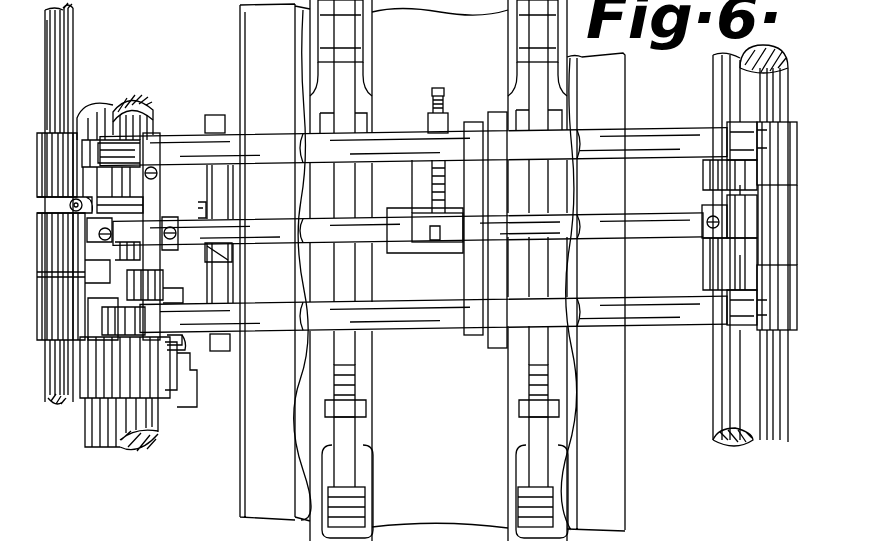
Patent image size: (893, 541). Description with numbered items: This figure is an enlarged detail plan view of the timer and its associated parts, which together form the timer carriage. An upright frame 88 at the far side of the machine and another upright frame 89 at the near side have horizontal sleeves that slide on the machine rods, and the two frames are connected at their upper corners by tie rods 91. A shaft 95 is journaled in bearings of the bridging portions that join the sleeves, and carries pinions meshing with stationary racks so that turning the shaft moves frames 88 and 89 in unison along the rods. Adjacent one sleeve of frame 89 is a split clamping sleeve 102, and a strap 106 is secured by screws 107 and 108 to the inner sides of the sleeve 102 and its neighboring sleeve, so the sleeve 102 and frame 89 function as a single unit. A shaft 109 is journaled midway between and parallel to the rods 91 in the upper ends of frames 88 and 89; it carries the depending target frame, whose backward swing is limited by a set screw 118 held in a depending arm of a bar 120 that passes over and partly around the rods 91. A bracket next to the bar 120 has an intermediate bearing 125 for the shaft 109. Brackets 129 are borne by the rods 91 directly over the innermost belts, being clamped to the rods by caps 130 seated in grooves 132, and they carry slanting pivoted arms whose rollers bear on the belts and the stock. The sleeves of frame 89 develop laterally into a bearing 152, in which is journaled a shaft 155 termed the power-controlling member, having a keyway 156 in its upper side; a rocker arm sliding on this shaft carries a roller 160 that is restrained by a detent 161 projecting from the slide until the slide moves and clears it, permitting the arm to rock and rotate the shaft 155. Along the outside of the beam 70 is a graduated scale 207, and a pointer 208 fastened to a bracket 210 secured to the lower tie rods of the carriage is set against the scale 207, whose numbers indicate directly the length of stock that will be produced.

The beam 70 is at (435, 267).
The upright frame 88 is at (786, 183).
The upright frame 89 is at (148, 98).
The tie rods 91 is at (404, 140).
The shaft 95 is at (640, 222).
The split clamping sleeve 102 is at (80, 407).
The strap 106 is at (188, 375).
The screw 107 is at (183, 357).
The screw 108 is at (187, 297).
The shaft 109 is at (380, 223).
The set screw 118 is at (463, 93).
The bar 120 is at (473, 332).
The intermediate bearing 125 is at (500, 350).
The bracket 129 is at (532, 357).
The caps 130 is at (530, 37).
The grooves 132 is at (518, 112).
The bearing 152 is at (43, 337).
The shaft 155 is at (70, 15).
The keyway 156 is at (70, 36).
The roller 160 is at (78, 195).
The detent 161 is at (105, 135).
The graduated scale 207 is at (236, 344).
The pointer 208 is at (233, 260).
The bracket 210 is at (215, 115).